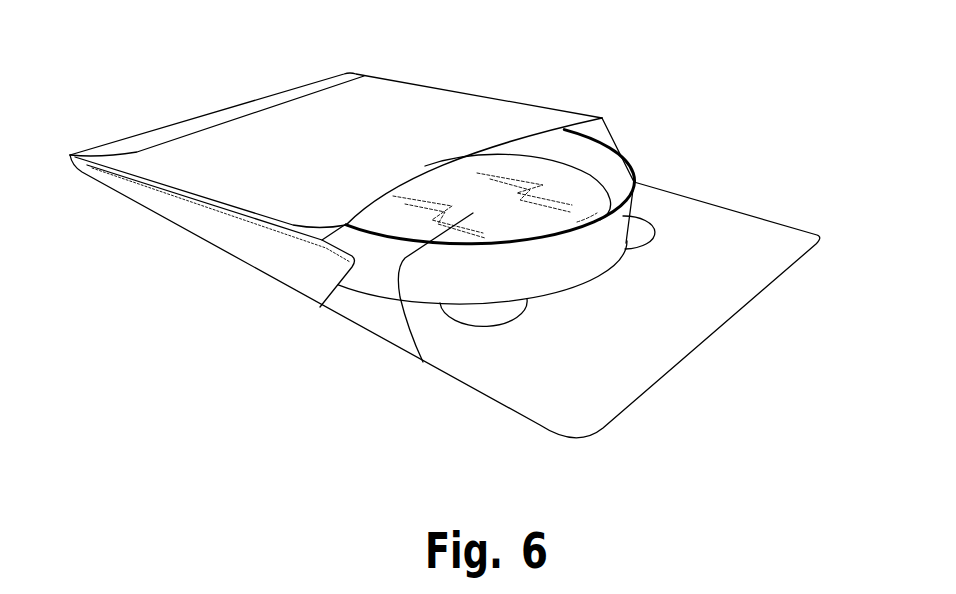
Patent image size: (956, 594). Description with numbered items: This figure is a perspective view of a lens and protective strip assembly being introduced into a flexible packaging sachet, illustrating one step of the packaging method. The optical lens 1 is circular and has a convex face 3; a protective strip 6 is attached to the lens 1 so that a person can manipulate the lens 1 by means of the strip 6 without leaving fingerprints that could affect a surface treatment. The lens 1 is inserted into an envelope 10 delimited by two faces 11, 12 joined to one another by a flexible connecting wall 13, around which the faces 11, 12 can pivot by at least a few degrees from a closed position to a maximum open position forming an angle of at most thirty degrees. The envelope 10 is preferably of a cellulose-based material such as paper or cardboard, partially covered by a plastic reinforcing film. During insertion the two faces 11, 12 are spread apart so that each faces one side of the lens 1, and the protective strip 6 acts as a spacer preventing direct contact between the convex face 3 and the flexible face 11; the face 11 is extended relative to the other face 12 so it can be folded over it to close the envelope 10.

The optical lens 1 is at (572, 196).
The convex face 3 is at (423, 365).
The protective strip 6 is at (573, 270).
The envelope 10 is at (413, 120).
The face of the envelope 11 is at (280, 167).
The face of the envelope 12 is at (365, 302).
The connecting wall 13 is at (170, 138).